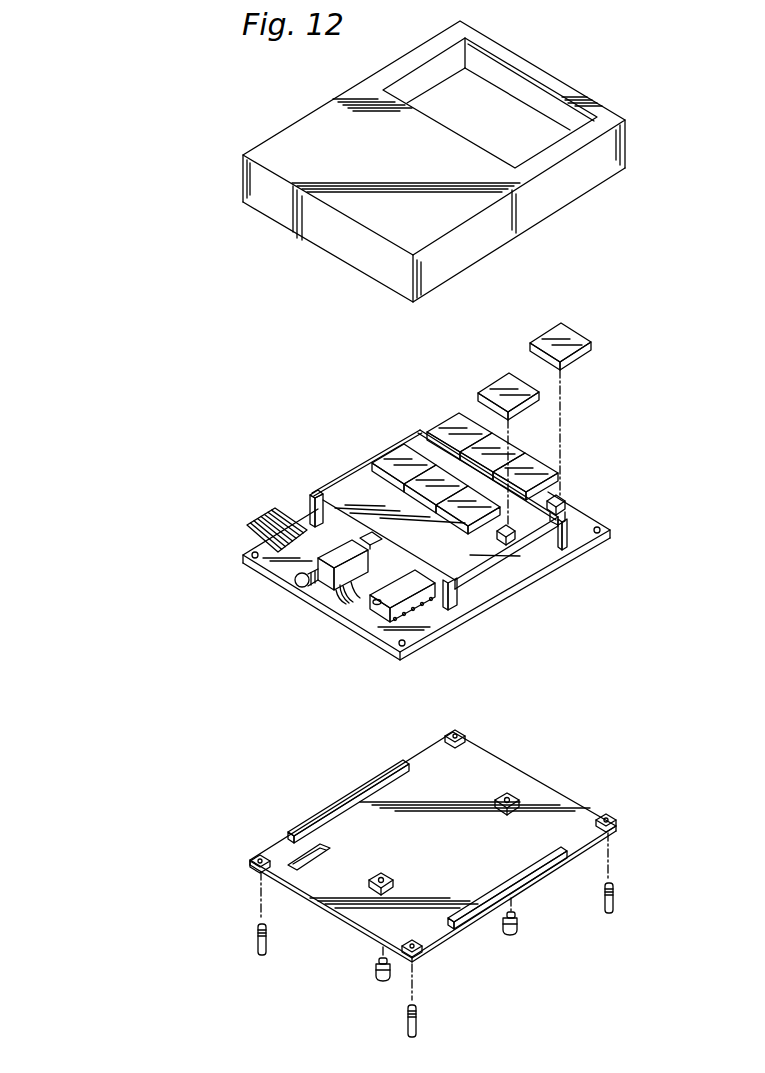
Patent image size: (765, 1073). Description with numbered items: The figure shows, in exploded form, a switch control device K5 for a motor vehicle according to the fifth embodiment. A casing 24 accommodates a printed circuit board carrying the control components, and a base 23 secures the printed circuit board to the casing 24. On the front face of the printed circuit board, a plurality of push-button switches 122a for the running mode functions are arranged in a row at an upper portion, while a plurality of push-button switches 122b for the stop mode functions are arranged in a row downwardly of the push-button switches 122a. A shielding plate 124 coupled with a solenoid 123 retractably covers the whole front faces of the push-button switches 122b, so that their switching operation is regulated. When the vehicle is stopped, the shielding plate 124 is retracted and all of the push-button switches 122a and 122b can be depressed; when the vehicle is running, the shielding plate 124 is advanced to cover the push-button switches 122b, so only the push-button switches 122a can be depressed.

The casing 24 is at (555, 87).
The switch control device K5 is at (172, 505).
The push-button switches 122a is at (477, 448).
The push-button switches 122b is at (417, 457).
The solenoid 123 is at (332, 587).
The shielding plate 124 is at (468, 553).
The base 23 is at (487, 768).